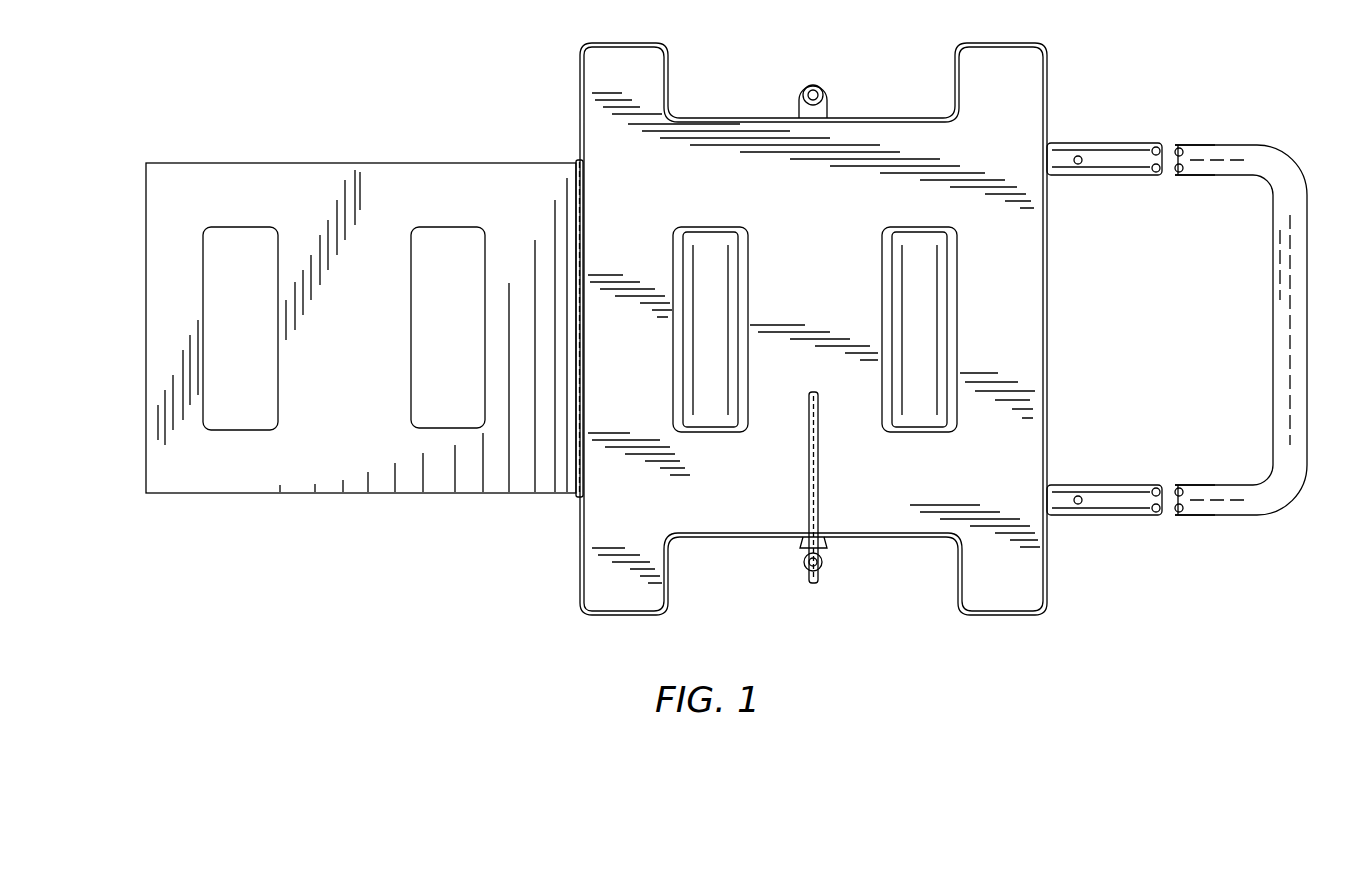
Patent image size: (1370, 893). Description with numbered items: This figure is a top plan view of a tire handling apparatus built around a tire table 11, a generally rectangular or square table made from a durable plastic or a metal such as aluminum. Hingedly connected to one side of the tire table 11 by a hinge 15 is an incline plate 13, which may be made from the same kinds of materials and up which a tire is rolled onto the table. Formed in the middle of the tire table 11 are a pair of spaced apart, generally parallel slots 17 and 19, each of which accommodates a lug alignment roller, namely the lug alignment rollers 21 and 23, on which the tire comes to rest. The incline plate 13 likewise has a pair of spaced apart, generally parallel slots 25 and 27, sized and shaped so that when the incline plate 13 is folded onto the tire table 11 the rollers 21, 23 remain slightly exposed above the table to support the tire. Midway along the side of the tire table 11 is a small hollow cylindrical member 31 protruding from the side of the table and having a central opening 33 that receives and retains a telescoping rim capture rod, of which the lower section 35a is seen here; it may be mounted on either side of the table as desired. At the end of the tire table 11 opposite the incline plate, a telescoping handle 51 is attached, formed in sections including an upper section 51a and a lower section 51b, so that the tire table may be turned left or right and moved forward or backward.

The tire table 11 is at (937, 542).
The incline plate 13 is at (368, 492).
The hinge 15 is at (580, 482).
The slot 17 is at (731, 366).
The slot 19 is at (948, 354).
The lug alignment roller 21 is at (705, 412).
The lug alignment roller 23 is at (920, 412).
The slot 25 is at (250, 403).
The slot 27 is at (430, 312).
The hollow cylindrical member 31 is at (805, 560).
The central opening 33 is at (822, 560).
The lower section of telescoping rim capture rod 35a is at (818, 497).
The telescoping handle 51 is at (1305, 340).
The upper section of telescoping handle 51a is at (1185, 143).
The lower section of telescoping handle 51b is at (1185, 515).